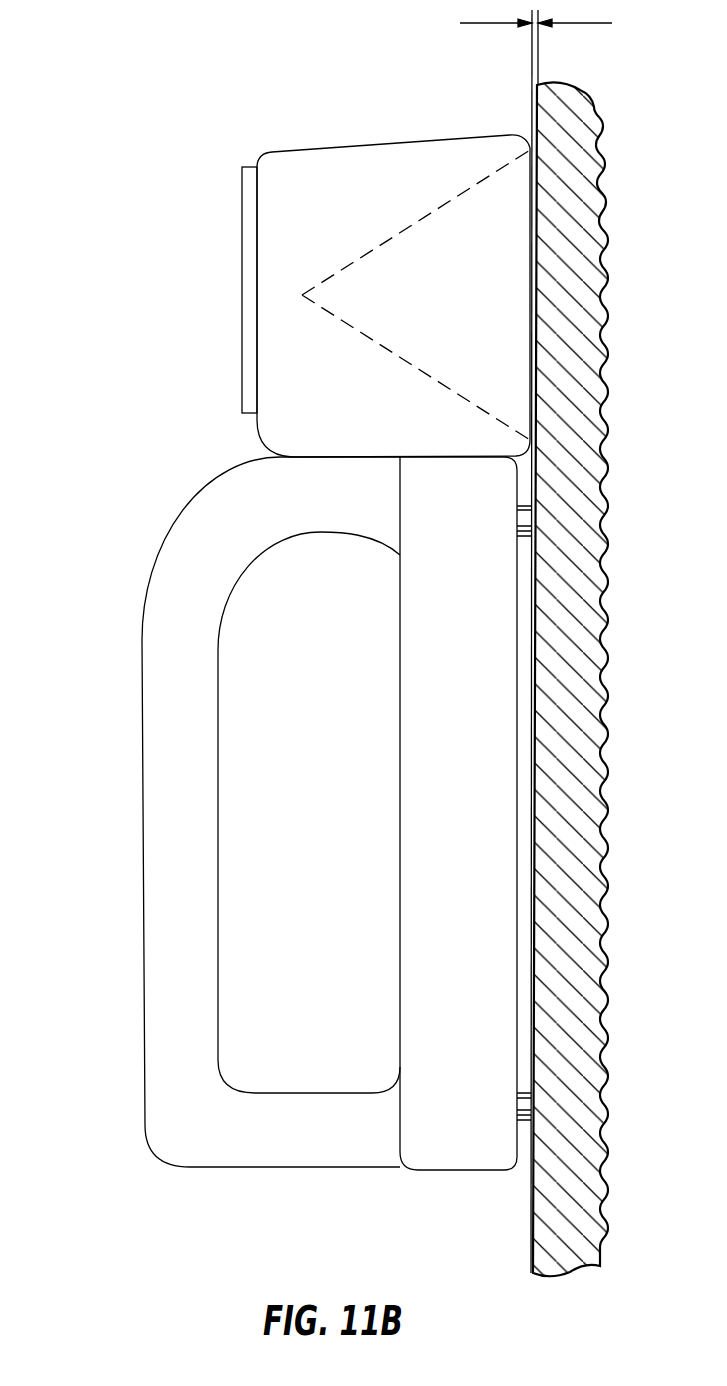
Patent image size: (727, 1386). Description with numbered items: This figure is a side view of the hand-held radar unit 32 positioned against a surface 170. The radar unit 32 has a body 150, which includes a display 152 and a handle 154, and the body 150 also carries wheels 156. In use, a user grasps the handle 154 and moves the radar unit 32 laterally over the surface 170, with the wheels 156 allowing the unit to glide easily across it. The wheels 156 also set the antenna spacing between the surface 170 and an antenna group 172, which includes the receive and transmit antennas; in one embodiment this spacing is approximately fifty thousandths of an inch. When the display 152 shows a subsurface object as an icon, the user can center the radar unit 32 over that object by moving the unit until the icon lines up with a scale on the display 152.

The hand-held radar unit 32 is at (123, 176).
The body 150 is at (400, 790).
The display 152 is at (242, 333).
The handle 154 is at (142, 833).
The wheels 156 is at (517, 520).
The surface 170 is at (378, 246).
The antenna group 172 is at (531, 1224).